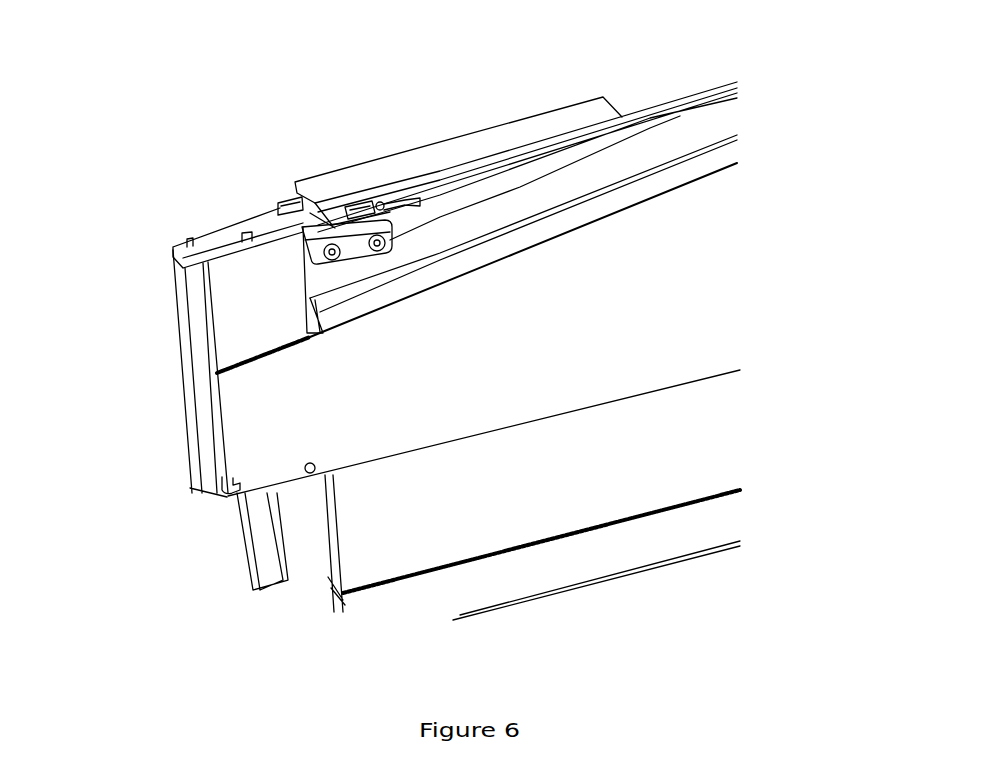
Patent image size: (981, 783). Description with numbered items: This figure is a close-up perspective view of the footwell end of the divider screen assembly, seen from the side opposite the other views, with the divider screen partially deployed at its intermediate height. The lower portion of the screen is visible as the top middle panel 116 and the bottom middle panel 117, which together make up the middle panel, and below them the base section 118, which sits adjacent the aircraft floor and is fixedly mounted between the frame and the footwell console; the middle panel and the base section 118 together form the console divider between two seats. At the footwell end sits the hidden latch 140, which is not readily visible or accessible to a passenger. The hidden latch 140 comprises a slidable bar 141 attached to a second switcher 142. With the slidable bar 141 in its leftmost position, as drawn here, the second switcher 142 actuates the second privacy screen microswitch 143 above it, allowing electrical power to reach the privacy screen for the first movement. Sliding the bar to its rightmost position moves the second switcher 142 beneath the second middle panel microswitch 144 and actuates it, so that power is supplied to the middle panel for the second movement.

The top middle panel 116 is at (650, 330).
The bottom middle panel 117 is at (673, 482).
The base section 118 is at (668, 549).
The hidden latch 140 is at (558, 74).
The slidable bar 141 is at (418, 218).
The second switcher 142 is at (350, 257).
The second privacy screen microswitch 143 is at (305, 202).
The second middle panel microswitch 144 is at (374, 217).